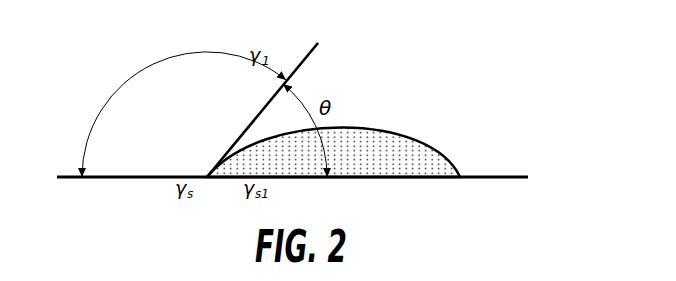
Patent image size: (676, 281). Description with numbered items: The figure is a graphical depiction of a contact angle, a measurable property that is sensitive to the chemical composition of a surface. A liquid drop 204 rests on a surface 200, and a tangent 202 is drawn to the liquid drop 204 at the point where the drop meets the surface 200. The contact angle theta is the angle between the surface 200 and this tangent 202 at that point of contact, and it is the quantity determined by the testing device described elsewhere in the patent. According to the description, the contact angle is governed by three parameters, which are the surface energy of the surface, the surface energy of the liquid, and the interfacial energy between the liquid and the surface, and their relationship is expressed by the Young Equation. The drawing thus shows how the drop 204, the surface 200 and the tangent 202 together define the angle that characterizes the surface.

The surface 200 is at (490, 177).
The tangent 202 is at (306, 60).
The liquid drop 204 is at (427, 137).